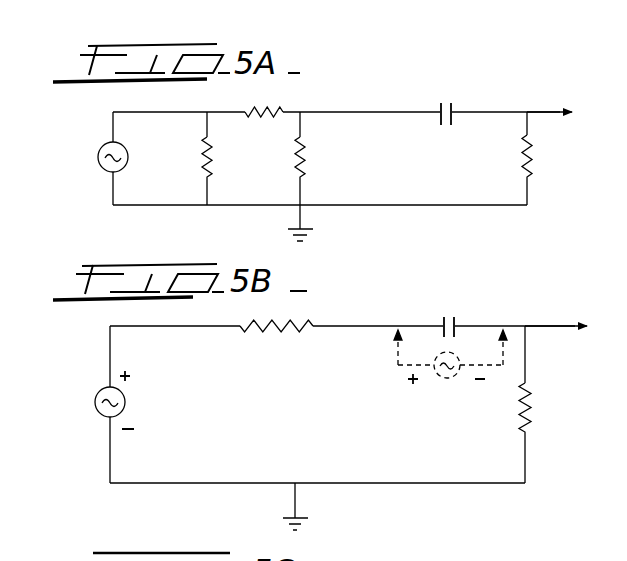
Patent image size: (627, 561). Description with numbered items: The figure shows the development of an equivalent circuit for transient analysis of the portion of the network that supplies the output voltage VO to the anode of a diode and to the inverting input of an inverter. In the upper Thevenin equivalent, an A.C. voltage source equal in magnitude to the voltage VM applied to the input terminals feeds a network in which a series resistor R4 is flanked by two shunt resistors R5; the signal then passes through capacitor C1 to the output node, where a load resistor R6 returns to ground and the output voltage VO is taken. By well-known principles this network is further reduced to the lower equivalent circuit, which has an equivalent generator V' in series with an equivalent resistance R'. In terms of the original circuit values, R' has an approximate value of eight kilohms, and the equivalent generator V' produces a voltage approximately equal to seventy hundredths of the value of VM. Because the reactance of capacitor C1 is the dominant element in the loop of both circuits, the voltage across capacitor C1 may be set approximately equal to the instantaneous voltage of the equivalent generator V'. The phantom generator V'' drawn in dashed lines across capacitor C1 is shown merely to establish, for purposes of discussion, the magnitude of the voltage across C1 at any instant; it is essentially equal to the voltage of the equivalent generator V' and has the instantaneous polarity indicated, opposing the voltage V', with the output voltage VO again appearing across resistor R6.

In FIG. 5A, the input voltage VM is at (127, 163).
In FIG. 5A, the resistor R4 is at (264, 102).
In FIG. 5A, the resistor R5 is at (268, 158).
In FIG. 5A, the capacitor C1 is at (442, 105).
In FIG. 5B, the capacitor C1 is at (447, 314).
In FIG. 5A, the resistor R6 is at (540, 158).
In FIG. 5B, the resistor R6 is at (539, 404).
In FIG. 5A, the output voltage VO is at (564, 117).
In FIG. 5B, the output voltage VO is at (569, 327).
In FIG. 5B, the equivalent generator V' is at (123, 400).
In FIG. 5B, the equivalent resistance R' is at (276, 338).
In FIG. 5B, the phantom generator V'' is at (450, 368).